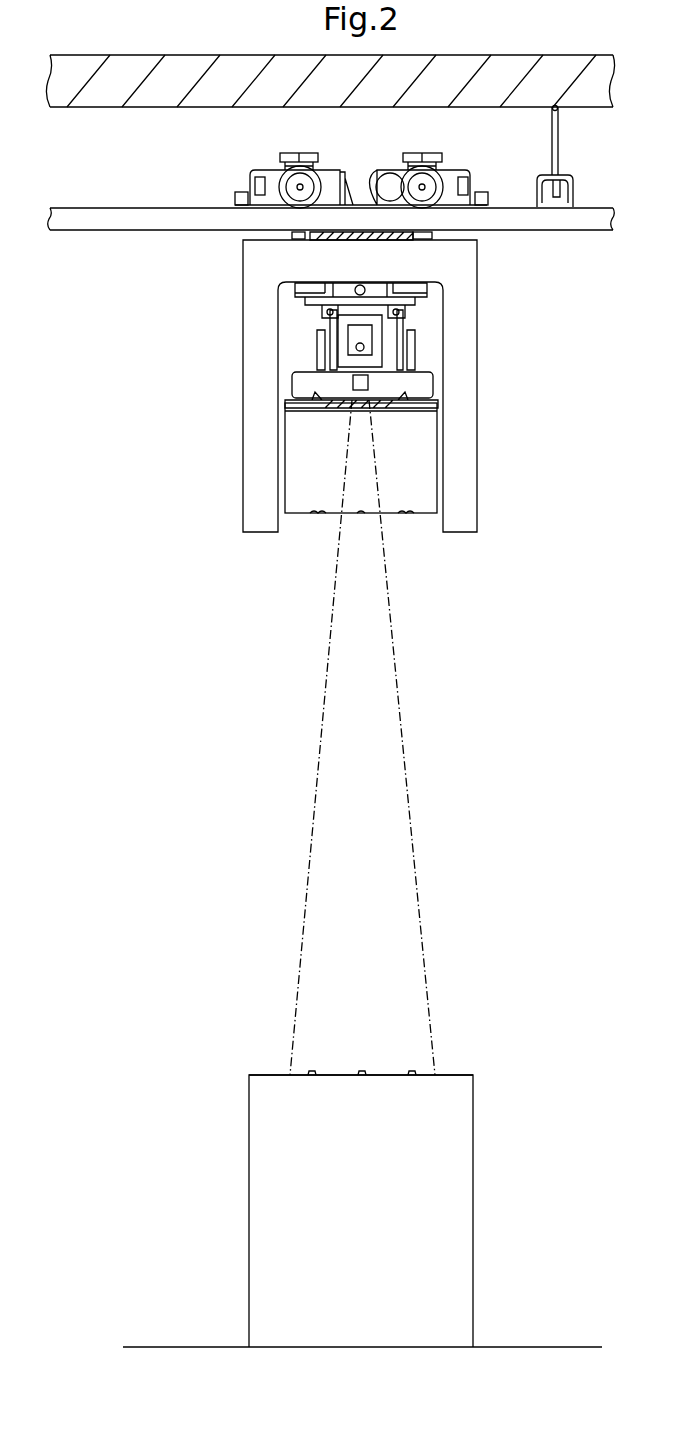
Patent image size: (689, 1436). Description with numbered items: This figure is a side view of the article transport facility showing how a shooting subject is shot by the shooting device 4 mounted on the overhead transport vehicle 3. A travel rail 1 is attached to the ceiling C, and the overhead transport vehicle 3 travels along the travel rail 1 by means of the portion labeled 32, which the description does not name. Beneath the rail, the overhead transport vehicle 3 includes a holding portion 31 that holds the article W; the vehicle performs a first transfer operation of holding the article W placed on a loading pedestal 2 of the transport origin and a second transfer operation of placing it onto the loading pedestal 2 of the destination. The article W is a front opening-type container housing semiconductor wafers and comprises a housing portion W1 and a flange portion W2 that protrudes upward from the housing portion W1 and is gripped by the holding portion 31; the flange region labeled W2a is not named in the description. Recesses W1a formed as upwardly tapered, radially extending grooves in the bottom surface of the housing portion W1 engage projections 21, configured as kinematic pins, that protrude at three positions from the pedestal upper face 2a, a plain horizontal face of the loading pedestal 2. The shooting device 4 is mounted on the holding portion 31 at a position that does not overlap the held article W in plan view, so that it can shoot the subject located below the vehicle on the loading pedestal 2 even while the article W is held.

The ceiling C is at (197, 107).
The travel rail 1 is at (97, 215).
The travel unit (trolley) 32 is at (290, 137).
The overhead transport vehicle 3 is at (213, 352).
The holding portion 31 is at (438, 379).
The shooting device 4 is at (353, 381).
The article W is at (353, 434).
The flange portion W2 is at (352, 390).
The engaged portion of article W2a is at (395, 396).
The housing portion W1 is at (300, 448).
The recesses W1a is at (400, 520).
The loading pedestal 2 is at (362, 1156).
The pedestal upper face 2a is at (270, 1075).
The projections 21 is at (362, 1022).